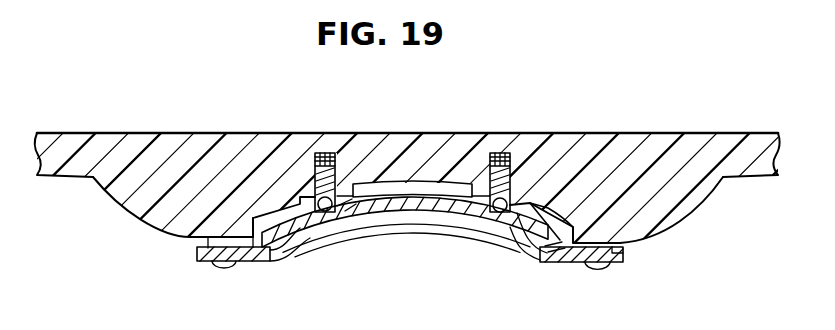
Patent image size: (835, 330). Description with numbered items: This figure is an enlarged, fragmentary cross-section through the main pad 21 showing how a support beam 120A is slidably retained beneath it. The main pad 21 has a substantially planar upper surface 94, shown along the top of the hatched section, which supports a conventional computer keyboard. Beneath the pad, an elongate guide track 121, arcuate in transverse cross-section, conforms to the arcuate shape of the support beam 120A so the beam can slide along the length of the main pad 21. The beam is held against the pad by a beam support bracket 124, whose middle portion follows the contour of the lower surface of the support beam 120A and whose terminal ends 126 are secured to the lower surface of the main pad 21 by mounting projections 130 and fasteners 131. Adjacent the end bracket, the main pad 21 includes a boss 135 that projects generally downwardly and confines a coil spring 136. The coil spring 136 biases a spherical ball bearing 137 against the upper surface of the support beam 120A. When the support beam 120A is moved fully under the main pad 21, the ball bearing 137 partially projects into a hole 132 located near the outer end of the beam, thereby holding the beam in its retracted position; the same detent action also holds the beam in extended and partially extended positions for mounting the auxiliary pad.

The main pad 21 is at (670, 120).
The upper surface 94 is at (110, 133).
The guide track 121 is at (268, 215).
The coil spring 136 is at (325, 155).
The ball bearing 137 is at (549, 207).
The support beam 120A is at (415, 200).
The beam support bracket 124 is at (347, 227).
The boss 135 is at (346, 210).
The mounting projection 130 is at (216, 241).
The terminal end 126 is at (198, 266).
The fastener 131 is at (232, 265).
The hole 132 is at (510, 226).